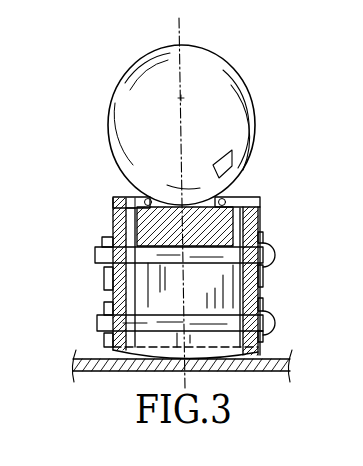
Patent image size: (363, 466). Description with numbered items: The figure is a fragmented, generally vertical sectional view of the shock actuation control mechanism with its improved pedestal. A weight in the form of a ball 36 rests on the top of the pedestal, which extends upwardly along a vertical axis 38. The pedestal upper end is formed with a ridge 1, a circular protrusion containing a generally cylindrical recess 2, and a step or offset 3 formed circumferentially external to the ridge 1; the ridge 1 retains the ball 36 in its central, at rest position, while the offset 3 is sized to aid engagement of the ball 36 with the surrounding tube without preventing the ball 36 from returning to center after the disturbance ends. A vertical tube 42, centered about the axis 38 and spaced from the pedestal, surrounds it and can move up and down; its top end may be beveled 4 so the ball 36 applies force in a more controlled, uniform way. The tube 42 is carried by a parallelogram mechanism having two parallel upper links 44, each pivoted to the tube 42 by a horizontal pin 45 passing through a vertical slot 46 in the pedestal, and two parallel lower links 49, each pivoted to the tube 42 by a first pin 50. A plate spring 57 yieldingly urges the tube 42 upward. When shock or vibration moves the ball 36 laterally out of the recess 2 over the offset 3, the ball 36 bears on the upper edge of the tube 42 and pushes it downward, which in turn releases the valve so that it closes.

The ridge 1 is at (113, 200).
The cylindrical recess 2 is at (213, 164).
The offset 3 is at (257, 199).
The bevel 4 is at (142, 197).
The ball 36 is at (133, 137).
The vertical axis 38 is at (178, 102).
The vertical tube 42 is at (117, 223).
The upper links 44 is at (112, 275).
The horizontal pin 45 is at (272, 253).
The vertical slot 46 is at (202, 297).
The lower links 49 is at (107, 300).
The first pin 50 is at (272, 322).
The plate spring 57 is at (258, 353).